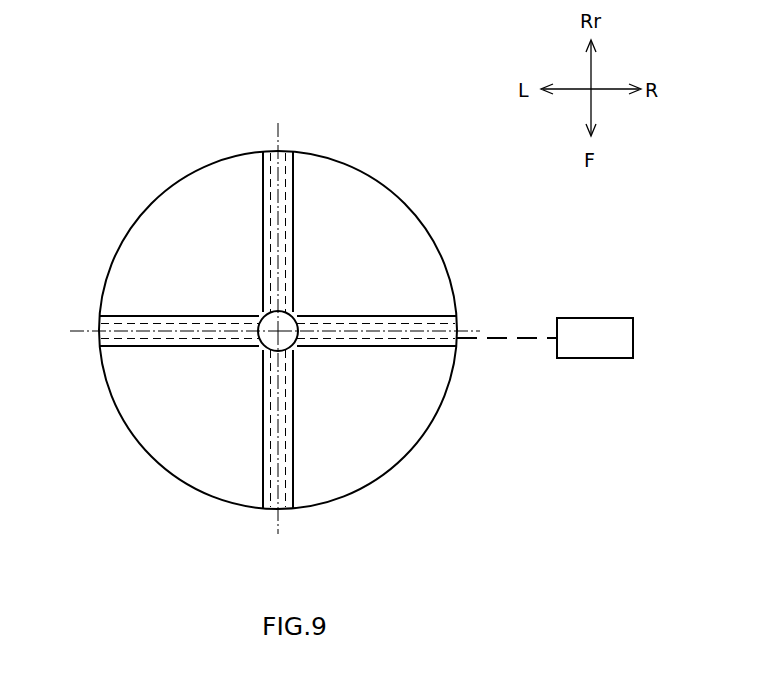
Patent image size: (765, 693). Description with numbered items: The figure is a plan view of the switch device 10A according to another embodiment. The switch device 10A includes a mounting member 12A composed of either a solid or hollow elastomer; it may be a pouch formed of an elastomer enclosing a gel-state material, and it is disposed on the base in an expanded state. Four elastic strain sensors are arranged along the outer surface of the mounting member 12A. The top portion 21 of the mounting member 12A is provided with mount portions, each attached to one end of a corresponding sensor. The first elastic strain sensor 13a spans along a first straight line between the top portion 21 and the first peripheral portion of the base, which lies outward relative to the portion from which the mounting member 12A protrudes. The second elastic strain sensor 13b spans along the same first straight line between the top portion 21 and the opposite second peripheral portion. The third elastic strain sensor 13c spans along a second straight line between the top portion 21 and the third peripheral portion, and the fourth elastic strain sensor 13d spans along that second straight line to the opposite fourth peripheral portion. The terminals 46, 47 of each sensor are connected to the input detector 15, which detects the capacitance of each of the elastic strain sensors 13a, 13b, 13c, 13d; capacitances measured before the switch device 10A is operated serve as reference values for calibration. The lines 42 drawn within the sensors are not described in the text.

The switch device 10A is at (110, 147).
The mounting member 12A is at (376, 447).
The first elastic strain sensor 13a is at (249, 465).
The second elastic strain sensor 13b is at (330, 222).
The third elastic strain sensor 13c is at (156, 362).
The fourth elastic strain sensor 13d is at (405, 358).
The input detector 15 is at (607, 318).
The top portion 21 is at (262, 313).
The guide groove / wire 42 is at (302, 184).
The terminal 46 is at (520, 371).
The terminal 47 is at (512, 343).